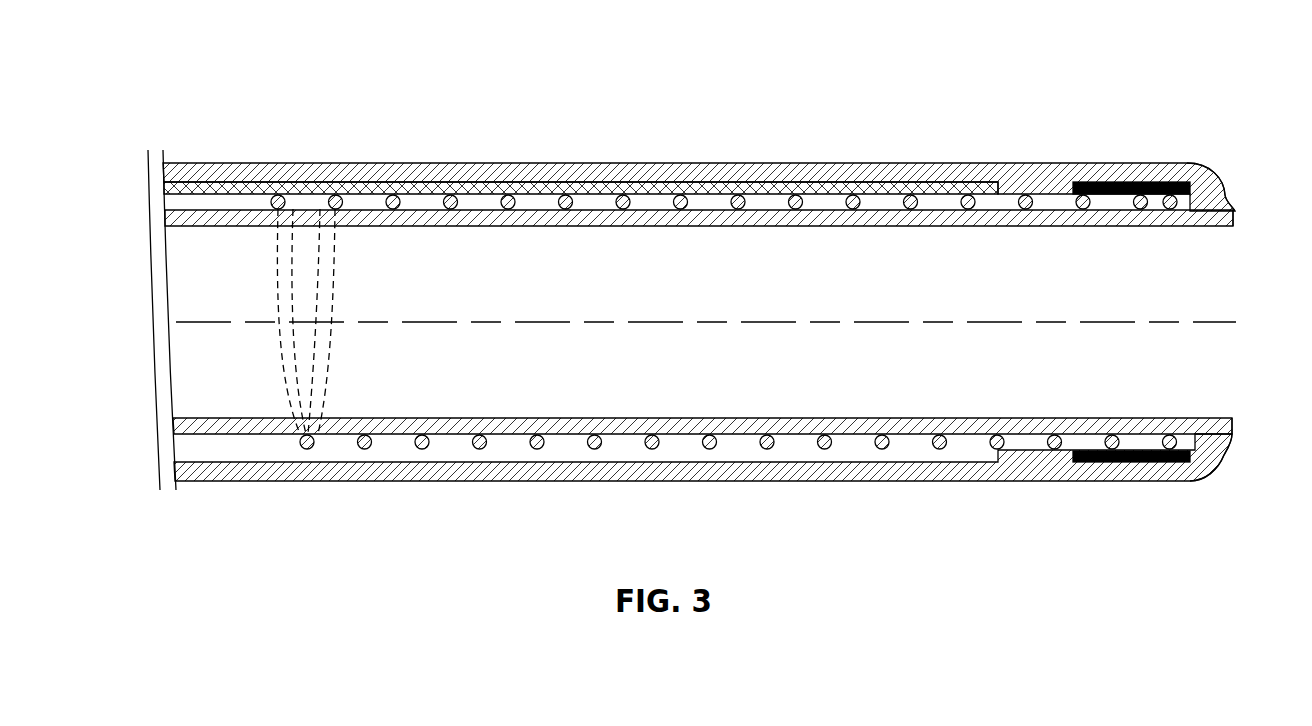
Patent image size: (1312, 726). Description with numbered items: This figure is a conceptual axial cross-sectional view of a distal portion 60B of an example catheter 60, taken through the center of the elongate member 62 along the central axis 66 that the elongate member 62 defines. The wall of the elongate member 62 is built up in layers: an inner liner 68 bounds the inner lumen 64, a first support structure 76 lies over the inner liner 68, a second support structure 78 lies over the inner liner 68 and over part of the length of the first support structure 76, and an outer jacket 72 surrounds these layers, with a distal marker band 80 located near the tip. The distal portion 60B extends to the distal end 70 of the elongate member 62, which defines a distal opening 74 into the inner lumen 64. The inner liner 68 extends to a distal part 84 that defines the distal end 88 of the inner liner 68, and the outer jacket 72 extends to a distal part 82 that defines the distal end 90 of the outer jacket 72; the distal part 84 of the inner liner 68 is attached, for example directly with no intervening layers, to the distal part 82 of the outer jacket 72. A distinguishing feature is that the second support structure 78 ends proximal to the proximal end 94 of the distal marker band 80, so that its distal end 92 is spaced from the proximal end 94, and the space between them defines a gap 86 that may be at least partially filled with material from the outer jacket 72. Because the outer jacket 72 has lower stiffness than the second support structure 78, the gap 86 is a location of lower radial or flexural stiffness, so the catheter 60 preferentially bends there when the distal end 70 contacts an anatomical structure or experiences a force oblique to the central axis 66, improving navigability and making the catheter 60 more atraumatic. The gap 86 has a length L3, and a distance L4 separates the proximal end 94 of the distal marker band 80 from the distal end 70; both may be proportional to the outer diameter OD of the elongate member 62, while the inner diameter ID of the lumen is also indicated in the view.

The distal portion 60B is at (118, 120).
The catheter 60 is at (346, 113).
The elongate member 62 is at (506, 142).
The inner lumen 64 is at (756, 359).
The central axis 66 is at (598, 322).
The inner liner 68 is at (597, 215).
The distal end 70 is at (1248, 213).
The outer jacket 72 is at (243, 170).
The distal opening 74 is at (1258, 317).
The first support structure 76 is at (310, 452).
The second support structure 78 is at (424, 452).
The distal marker band 80 is at (1141, 470).
The distal part of outer jacket 82 is at (1215, 452).
The distal part of inner liner 84 is at (1220, 224).
The gap 86 is at (1028, 190).
The distal end of inner liner 88 is at (1233, 418).
The distal end of outer jacket 90 is at (1233, 437).
The distal end of second support structure 92 is at (1000, 452).
The proximal end of distal marker band 94 is at (1070, 455).
The outer diameter OD is at (932, 152).
The inner diameter ID is at (986, 237).
The length of gap L3 is at (1085, 49).
The distance between proximal end of marker band and distal tip L4 is at (1243, 592).